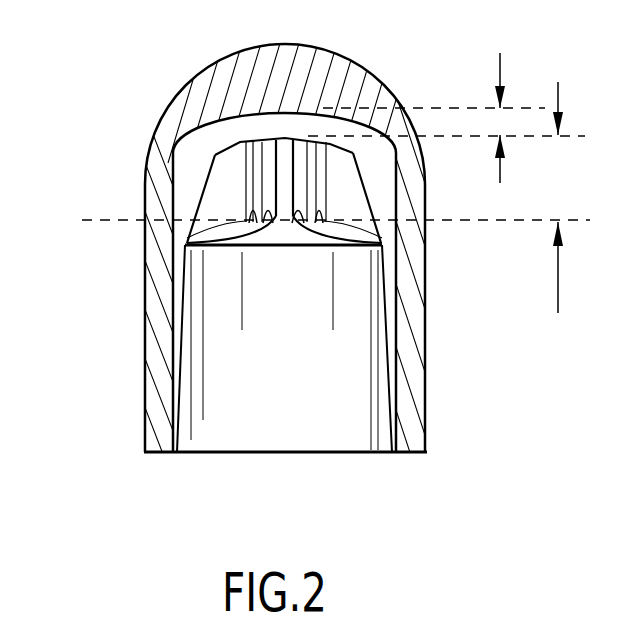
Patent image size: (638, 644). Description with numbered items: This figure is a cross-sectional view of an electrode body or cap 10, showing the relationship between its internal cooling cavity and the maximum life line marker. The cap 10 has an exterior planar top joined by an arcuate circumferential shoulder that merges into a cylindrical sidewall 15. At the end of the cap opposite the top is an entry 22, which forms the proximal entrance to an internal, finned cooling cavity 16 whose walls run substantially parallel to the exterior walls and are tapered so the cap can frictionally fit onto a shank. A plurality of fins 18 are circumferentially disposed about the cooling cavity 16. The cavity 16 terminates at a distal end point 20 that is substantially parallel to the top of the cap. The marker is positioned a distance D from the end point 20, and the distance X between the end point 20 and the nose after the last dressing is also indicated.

The electrode cap 10 is at (90, 402).
The cylindrical sidewall 15 is at (427, 251).
The cooling cavity 16 is at (308, 367).
The fins 18 is at (275, 172).
The distal end point 20 is at (284, 140).
The entry 22 is at (386, 453).